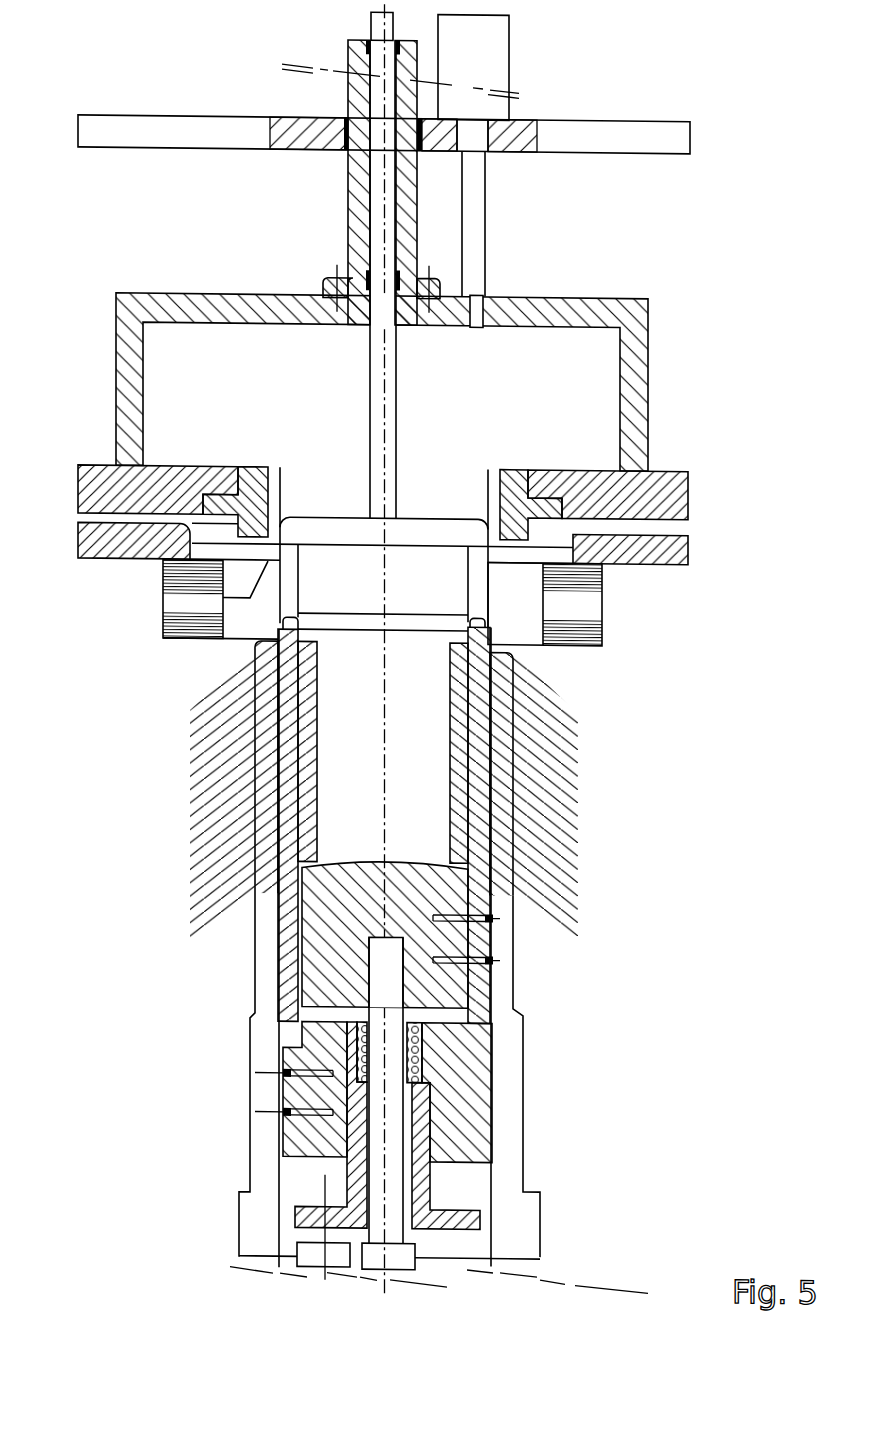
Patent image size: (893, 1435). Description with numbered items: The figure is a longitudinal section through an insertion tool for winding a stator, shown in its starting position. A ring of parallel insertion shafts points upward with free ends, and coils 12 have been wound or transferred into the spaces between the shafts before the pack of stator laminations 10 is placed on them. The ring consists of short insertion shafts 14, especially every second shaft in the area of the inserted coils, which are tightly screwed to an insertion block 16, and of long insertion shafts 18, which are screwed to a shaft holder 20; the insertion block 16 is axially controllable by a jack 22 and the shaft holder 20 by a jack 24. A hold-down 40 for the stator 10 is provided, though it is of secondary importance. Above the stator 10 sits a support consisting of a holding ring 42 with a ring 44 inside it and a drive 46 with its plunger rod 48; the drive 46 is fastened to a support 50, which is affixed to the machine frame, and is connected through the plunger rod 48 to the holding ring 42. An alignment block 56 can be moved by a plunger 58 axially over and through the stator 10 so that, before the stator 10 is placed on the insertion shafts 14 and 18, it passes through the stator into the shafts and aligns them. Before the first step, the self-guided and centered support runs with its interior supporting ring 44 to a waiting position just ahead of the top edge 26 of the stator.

The stator 10 is at (580, 595).
The coils 12 is at (565, 817).
The short insertion shafts 14 is at (493, 634).
The insertion block 16 is at (443, 978).
The long insertion shafts 18 is at (250, 639).
The shaft holder 20 is at (330, 1036).
The jack 22 is at (403, 1253).
The jack 24 is at (297, 1252).
The top edge of the stator 26 is at (223, 595).
The hold-down 40 is at (488, 541).
The holding ring 42 is at (655, 490).
The ring 44 is at (510, 481).
The drive 46 is at (475, 54).
The plunger rod 48 is at (474, 180).
The support 50 is at (655, 133).
The alignment block 56 is at (408, 558).
The plunger 58 is at (383, 228).